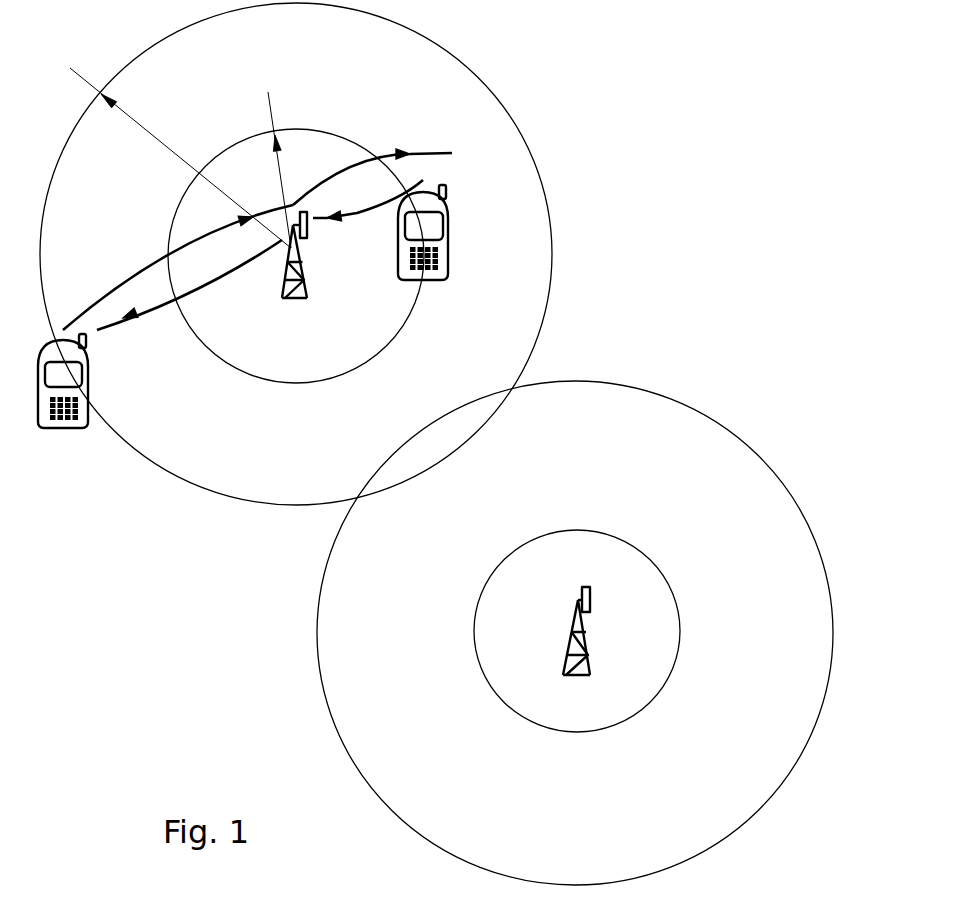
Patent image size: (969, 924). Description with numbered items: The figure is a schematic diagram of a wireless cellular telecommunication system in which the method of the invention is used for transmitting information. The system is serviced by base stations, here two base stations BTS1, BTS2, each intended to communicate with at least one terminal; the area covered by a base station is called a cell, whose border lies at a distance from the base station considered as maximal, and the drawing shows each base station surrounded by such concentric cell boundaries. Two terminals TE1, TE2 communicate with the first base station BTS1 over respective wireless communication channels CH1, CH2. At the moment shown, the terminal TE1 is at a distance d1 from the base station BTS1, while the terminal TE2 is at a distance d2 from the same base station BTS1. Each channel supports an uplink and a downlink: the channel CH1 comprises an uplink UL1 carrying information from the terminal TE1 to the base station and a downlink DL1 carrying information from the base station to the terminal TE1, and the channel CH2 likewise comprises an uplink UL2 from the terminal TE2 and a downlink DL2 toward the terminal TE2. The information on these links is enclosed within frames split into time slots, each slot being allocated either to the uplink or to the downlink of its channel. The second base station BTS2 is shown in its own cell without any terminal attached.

The base station BTS1 is at (307, 270).
The base station BTS2 is at (576, 614).
The terminal TE1 is at (47, 430).
The terminal TE2 is at (448, 245).
The wireless communication channel CH1 is at (178, 267).
The wireless communication channel CH2 is at (372, 194).
The uplink UL1 is at (178, 267).
The downlink DL1 is at (189, 285).
The uplink UL2 is at (368, 209).
The downlink DL2 is at (372, 177).
The distance d1 is at (70, 68).
The distance d2 is at (268, 92).